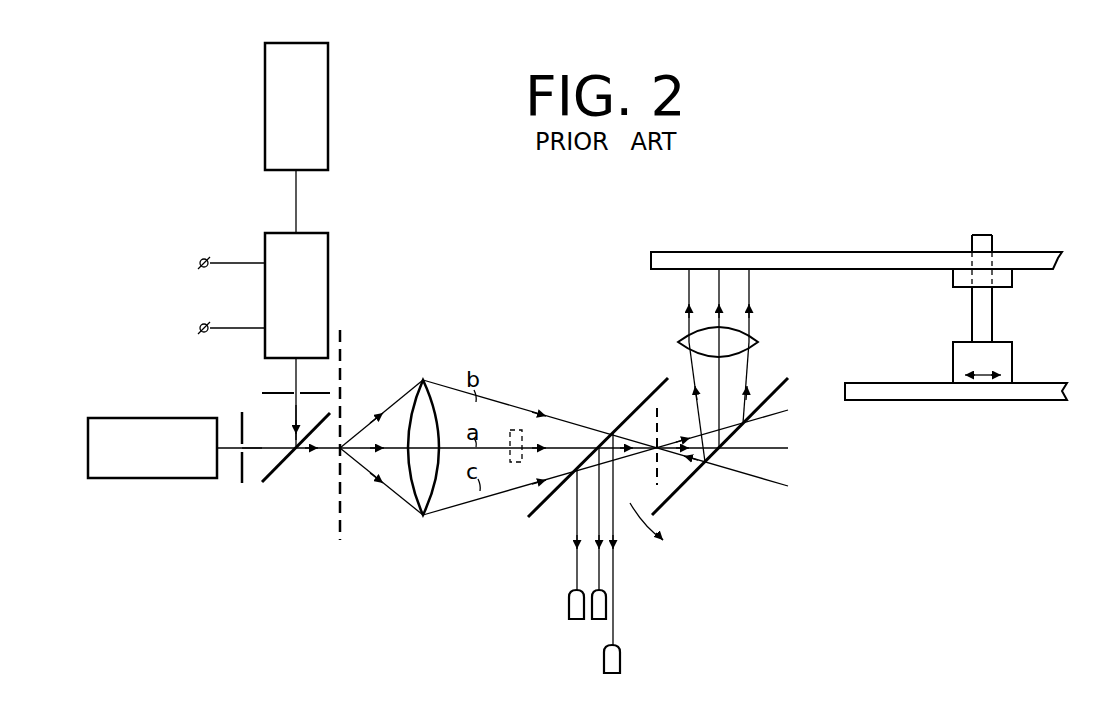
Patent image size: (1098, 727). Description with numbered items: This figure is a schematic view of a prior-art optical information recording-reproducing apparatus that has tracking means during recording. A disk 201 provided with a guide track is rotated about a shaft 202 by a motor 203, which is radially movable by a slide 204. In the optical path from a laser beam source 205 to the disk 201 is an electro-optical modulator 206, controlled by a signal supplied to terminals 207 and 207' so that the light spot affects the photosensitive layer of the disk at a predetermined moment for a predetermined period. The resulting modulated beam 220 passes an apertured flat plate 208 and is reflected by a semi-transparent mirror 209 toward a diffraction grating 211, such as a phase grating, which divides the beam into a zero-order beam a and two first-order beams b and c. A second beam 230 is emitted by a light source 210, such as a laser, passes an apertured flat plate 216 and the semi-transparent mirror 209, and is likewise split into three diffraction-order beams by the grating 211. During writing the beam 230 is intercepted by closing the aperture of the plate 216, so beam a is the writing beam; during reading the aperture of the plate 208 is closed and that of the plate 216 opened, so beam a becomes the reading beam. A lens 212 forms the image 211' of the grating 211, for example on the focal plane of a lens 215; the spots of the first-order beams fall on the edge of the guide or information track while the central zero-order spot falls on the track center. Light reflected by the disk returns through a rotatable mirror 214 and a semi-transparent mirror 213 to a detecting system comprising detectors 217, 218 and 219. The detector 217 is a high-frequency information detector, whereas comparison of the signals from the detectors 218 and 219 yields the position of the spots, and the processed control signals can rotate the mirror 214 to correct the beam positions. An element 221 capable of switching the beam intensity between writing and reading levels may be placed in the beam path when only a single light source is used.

The disk 201 is at (880, 252).
The shaft 202 is at (993, 308).
The motor 203 is at (1005, 355).
The slide 204 is at (1026, 400).
The laser beam source 205 is at (330, 82).
The electro-optical modulator 206 is at (330, 265).
The terminal 207 is at (195, 263).
The terminal 207' is at (195, 328).
The apertured flat plate 208 is at (264, 393).
The semi-transparent mirror 209 is at (276, 474).
The light source 210 is at (137, 478).
The diffraction grating 211 is at (307, 444).
The image of the diffraction grating 211' is at (641, 452).
The lens 212 is at (412, 493).
The semi-transparent mirror 213 is at (545, 508).
The rotatable mirror 214 is at (668, 503).
The lens 215 is at (758, 342).
The apertured flat plate 216 is at (242, 483).
The detector 217 is at (596, 619).
The detector 218 is at (569, 604).
The detector 219 is at (620, 657).
The modulated beam 220 is at (296, 420).
The element 221 is at (520, 462).
The beam 230 is at (258, 450).